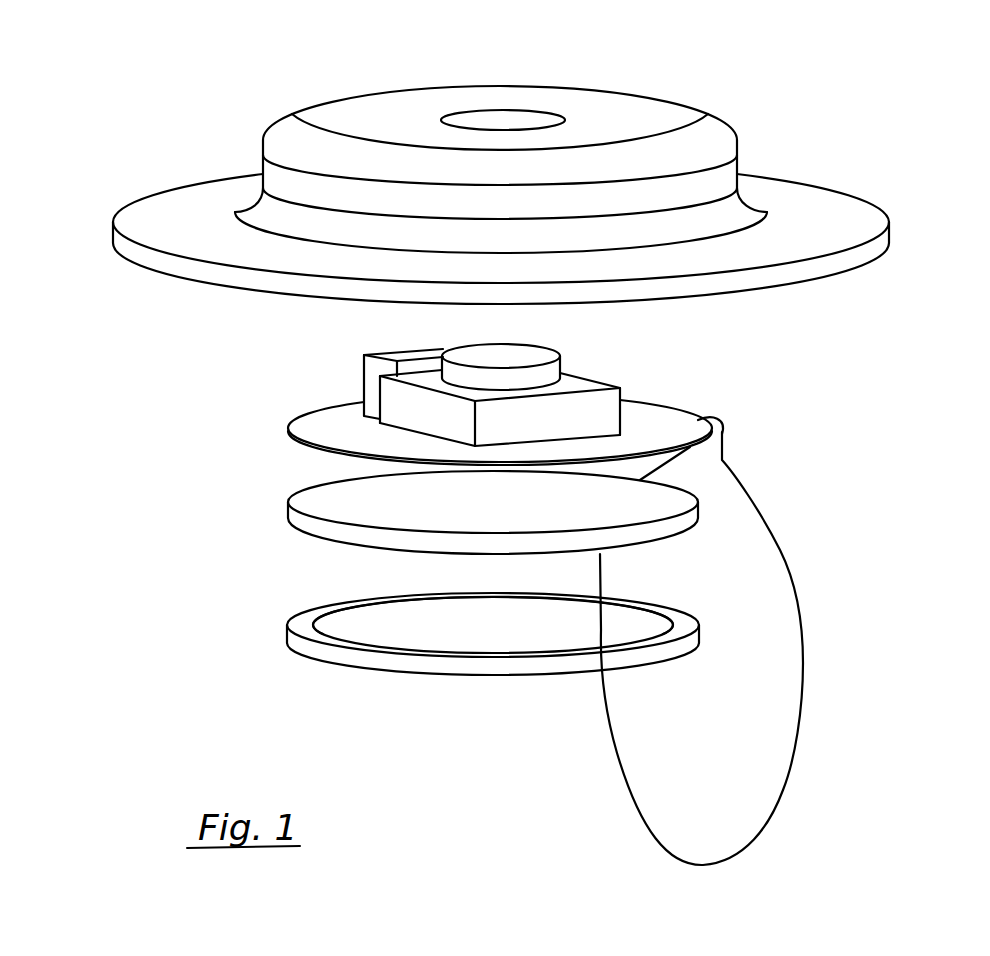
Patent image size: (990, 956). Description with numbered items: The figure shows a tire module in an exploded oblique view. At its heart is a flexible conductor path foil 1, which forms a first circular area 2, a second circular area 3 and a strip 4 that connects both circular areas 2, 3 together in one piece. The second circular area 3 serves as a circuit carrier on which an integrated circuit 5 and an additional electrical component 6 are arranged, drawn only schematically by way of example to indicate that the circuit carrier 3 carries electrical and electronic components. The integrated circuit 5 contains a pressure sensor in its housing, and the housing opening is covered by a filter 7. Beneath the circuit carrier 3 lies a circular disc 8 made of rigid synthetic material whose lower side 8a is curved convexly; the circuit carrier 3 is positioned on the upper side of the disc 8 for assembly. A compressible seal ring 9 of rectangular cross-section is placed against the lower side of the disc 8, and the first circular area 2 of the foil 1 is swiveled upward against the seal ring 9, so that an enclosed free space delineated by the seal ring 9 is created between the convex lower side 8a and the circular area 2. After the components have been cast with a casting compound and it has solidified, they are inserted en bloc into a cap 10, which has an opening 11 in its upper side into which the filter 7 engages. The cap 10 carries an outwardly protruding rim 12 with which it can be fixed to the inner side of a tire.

The flexible conductor path foil 1 is at (530, 613).
The first circular area 2 is at (763, 716).
The second circular area 3 is at (641, 427).
The strip 4 is at (713, 425).
The integrated circuit 5 is at (415, 419).
The additional electrical component 6 is at (373, 373).
The filter 7 is at (548, 373).
The circular disc of rigid synthetic material 8 is at (456, 573).
The lower side of the disc 8a is at (382, 507).
The compressible seal ring 9 is at (491, 672).
The cap 10 is at (540, 182).
The opening 11 is at (545, 119).
The outwardly protruding rim 12 is at (840, 223).